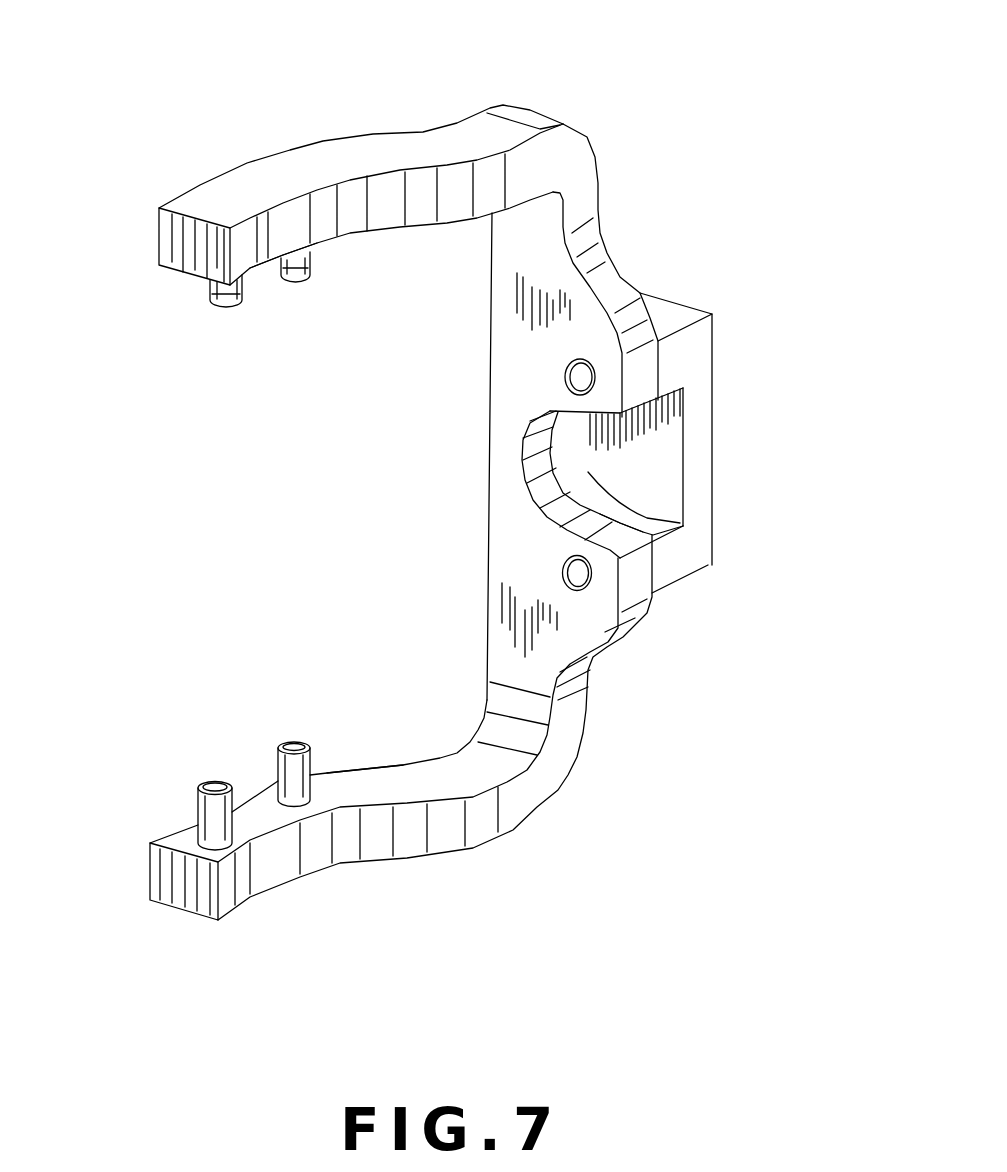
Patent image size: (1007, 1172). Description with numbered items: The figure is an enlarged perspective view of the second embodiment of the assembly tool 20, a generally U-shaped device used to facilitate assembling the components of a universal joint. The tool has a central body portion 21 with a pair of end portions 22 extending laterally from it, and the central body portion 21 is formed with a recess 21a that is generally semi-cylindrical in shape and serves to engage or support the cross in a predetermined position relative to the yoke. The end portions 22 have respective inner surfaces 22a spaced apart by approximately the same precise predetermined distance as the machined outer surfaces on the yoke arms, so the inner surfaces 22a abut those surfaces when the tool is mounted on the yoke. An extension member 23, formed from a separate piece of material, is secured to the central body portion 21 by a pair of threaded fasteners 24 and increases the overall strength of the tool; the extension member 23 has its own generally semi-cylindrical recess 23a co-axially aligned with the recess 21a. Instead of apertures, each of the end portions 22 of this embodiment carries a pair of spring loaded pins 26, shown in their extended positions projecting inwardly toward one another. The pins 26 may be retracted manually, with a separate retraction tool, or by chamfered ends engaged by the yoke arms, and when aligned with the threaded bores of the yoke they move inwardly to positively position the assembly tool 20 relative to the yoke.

The assembly tool 20 is at (684, 96).
The central body portion 21 is at (507, 307).
The recess 21a is at (557, 520).
The end portions 22 is at (432, 142).
The inner surfaces 22a is at (195, 277).
The extension member 23 is at (697, 358).
The recess 23a is at (613, 509).
The threaded fasteners 24 is at (568, 376).
The spring loaded pins 26 is at (297, 285).